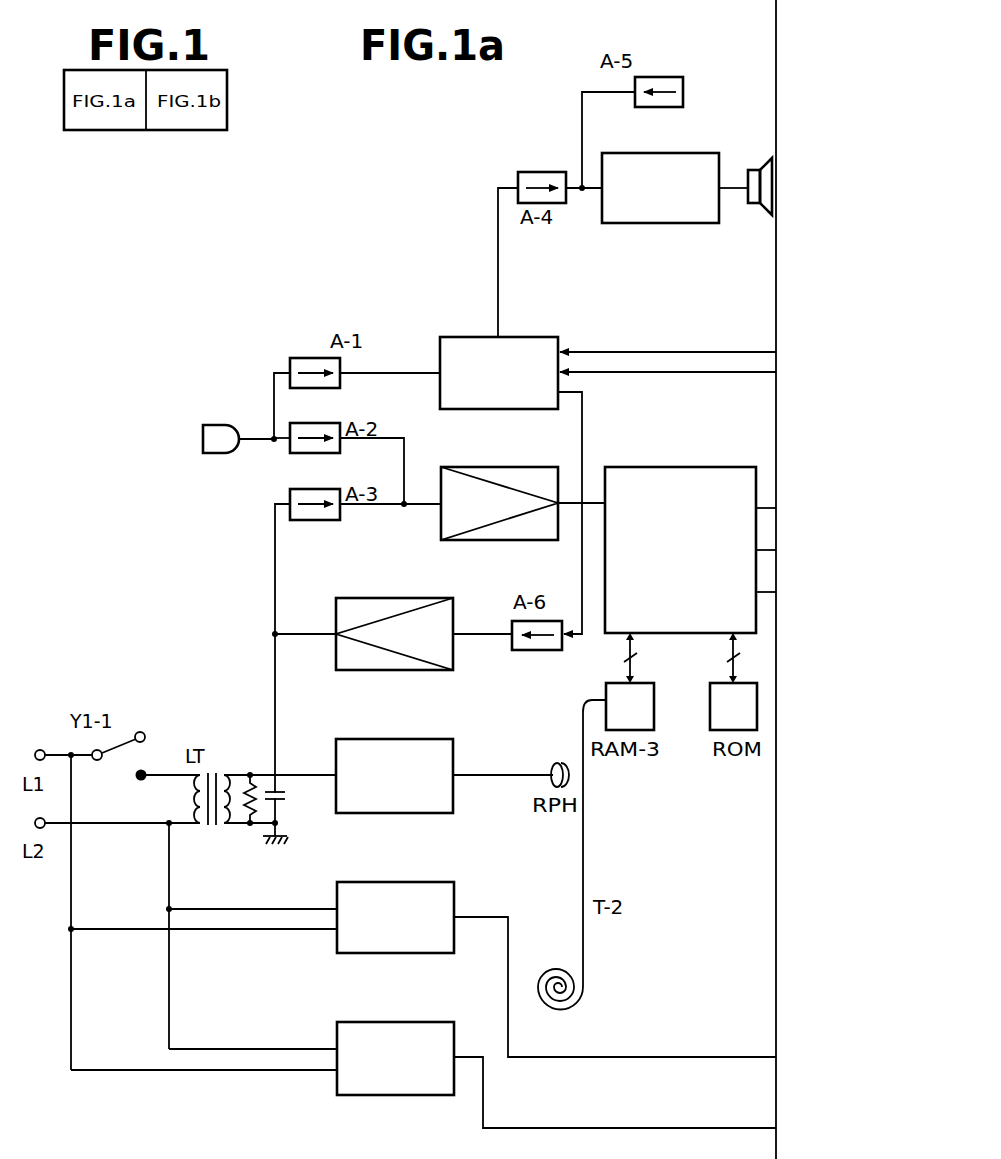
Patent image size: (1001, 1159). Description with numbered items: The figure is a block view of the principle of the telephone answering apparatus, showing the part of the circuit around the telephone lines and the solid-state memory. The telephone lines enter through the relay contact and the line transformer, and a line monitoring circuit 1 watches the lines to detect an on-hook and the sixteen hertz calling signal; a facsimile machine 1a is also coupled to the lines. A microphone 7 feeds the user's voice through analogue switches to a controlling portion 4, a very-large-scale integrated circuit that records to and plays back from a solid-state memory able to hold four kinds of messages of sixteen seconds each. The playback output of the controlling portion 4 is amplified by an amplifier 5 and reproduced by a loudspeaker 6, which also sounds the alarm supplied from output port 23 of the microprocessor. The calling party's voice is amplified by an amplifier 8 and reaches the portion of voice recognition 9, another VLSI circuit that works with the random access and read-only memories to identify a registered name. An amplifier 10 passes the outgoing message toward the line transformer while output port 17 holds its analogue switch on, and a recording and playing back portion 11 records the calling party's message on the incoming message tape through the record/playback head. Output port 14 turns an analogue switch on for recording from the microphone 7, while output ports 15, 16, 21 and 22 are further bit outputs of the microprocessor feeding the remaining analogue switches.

The line monitoring circuit 1 is at (337, 888).
The facsimile machine 1a is at (375, 1022).
The controlling portion 4 is at (487, 337).
The amplifier 5 is at (618, 153).
The loudspeaker 6 is at (750, 165).
The microphone 7 is at (203, 425).
The amplifier 8 is at (441, 467).
The portion of voice recognition 9 is at (610, 467).
The amplifier 10 is at (338, 598).
The recording and playing back portion 11 is at (336, 745).
The output port 14 is at (313, 358).
The output port 15 is at (358, 408).
The output port 16 is at (358, 474).
The output port 17 is at (580, 665).
The output port 21 is at (542, 172).
The output port 22 is at (714, 59).
The output port 23 is at (683, 92).